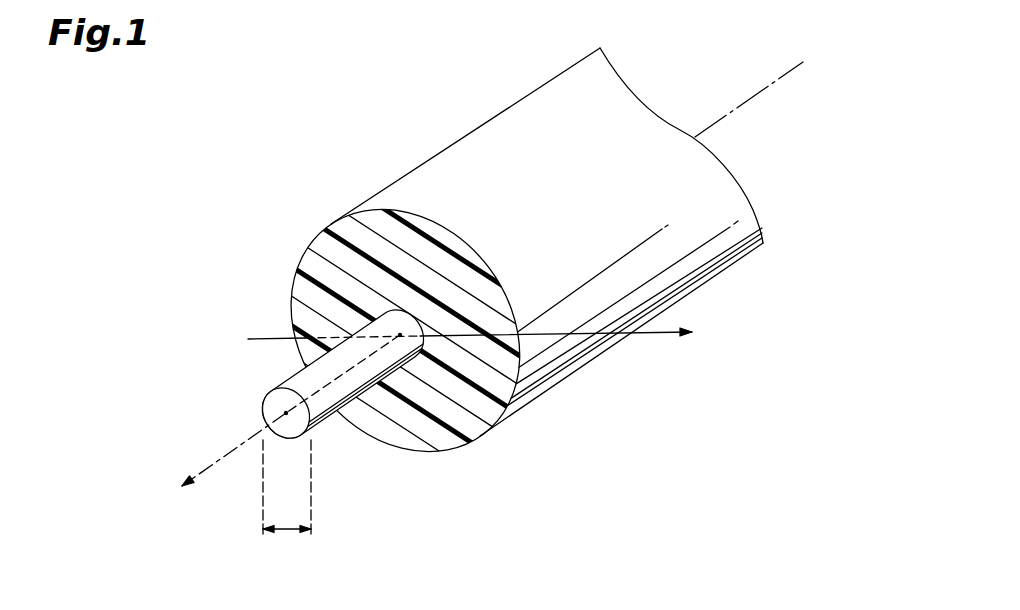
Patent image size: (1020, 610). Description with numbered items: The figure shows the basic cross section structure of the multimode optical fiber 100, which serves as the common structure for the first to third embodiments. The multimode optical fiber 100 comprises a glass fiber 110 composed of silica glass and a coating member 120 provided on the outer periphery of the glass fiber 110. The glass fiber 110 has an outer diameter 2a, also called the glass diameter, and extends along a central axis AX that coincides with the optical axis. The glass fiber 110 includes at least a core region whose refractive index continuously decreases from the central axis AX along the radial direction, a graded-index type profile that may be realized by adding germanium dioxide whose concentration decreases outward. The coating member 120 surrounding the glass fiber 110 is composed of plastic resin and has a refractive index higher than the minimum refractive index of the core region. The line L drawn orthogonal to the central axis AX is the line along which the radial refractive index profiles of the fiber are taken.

The multimode optical fiber 100 is at (469, 307).
The glass fiber 110 is at (278, 381).
The coating member 120 is at (313, 263).
The central axis AX is at (267, 419).
The line L is at (482, 332).
The outer diameter 2a is at (287, 503).